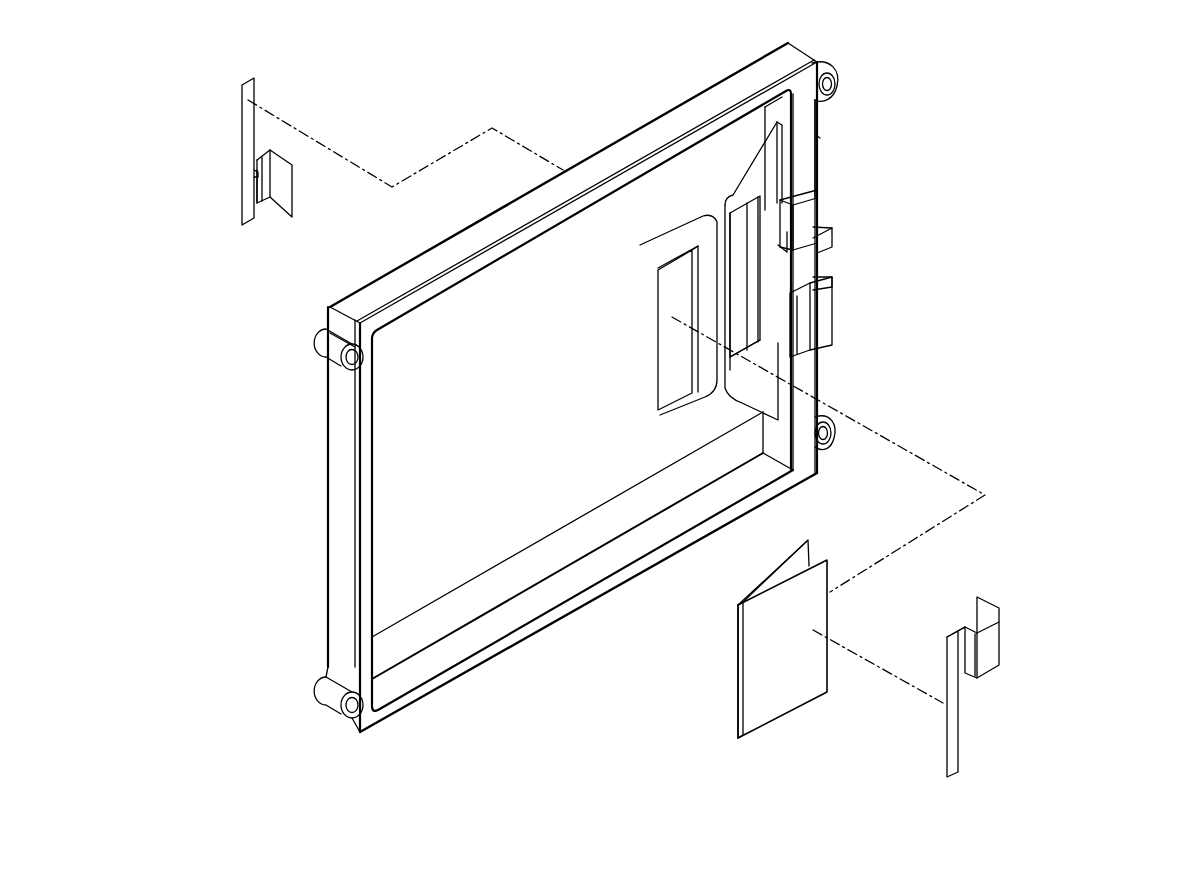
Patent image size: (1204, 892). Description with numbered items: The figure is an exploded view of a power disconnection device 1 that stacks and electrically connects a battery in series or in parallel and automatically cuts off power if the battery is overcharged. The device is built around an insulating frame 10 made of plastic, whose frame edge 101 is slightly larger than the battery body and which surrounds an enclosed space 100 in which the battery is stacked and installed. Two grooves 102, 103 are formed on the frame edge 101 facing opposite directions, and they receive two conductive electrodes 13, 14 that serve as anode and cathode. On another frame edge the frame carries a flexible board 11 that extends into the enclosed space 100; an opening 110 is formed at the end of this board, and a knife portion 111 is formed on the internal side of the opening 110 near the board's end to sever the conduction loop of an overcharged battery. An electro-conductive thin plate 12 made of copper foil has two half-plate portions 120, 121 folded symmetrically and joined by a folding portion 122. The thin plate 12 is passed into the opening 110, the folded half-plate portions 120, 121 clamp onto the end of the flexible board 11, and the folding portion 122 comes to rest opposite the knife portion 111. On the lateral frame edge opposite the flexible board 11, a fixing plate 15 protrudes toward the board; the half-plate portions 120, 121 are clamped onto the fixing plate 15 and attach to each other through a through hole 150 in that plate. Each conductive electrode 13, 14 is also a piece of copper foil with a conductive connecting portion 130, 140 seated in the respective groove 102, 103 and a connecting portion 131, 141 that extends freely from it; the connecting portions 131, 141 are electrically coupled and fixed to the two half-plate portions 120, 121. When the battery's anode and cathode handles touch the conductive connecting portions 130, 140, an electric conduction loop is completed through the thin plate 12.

The power disconnection device 1 is at (1061, 163).
The insulating frame 10 is at (326, 437).
The enclosed space 100 is at (450, 615).
The frame edge 101 is at (807, 143).
The groove 102 is at (817, 213).
The groove 103 is at (830, 302).
The flexible board 11 is at (600, 430).
The opening 110 is at (678, 383).
The knife portion 111 is at (693, 285).
The fixing plate 15 is at (757, 183).
The through hole 150 is at (750, 323).
The electro-conductive thin plate 12 is at (736, 683).
The half-plate portion 120 is at (787, 697).
The half-plate portion 121 is at (808, 553).
The folding portion 122 is at (738, 648).
The conductive electrode 13 is at (1005, 635).
The conductive connecting portion 130 is at (985, 607).
The connecting portion 131 is at (955, 740).
The conductive electrode 14 is at (232, 225).
The conductive connecting portion 140 is at (277, 198).
The connecting portion 141 is at (250, 126).